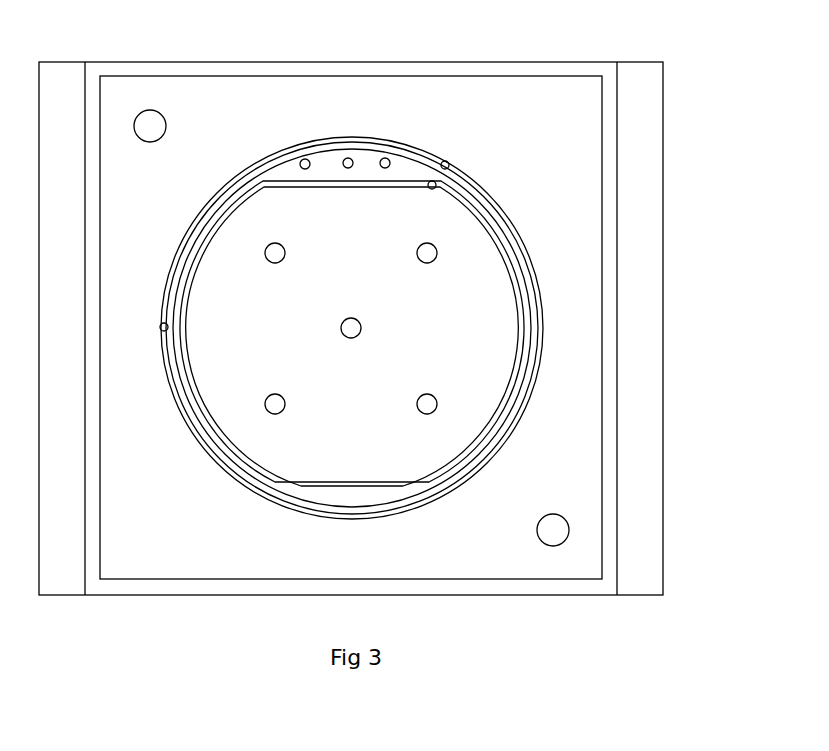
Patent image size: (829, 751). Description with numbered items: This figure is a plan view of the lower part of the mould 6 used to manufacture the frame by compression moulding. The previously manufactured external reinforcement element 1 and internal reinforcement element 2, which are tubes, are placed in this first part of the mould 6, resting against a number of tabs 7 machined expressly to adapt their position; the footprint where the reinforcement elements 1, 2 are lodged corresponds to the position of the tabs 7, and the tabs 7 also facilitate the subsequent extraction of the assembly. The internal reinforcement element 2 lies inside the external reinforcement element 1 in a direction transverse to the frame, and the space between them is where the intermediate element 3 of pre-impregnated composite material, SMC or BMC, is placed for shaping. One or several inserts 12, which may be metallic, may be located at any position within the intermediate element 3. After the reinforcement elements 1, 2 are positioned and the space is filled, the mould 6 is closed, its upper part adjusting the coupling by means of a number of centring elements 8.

The external reinforcement element 1 is at (386, 153).
The internal reinforcement element 2 is at (272, 182).
The intermediate element 3 is at (367, 160).
The mould 6 is at (567, 159).
The tabs 7 is at (500, 457).
The centring elements 8 is at (553, 530).
The inserts 12 is at (309, 167).